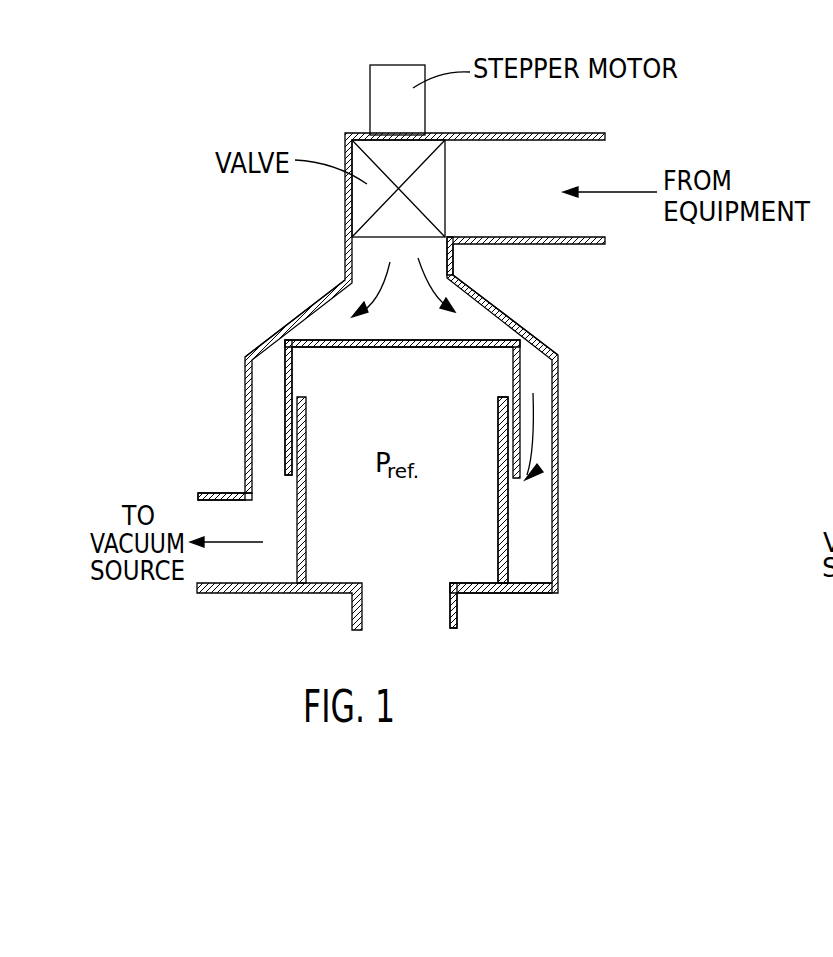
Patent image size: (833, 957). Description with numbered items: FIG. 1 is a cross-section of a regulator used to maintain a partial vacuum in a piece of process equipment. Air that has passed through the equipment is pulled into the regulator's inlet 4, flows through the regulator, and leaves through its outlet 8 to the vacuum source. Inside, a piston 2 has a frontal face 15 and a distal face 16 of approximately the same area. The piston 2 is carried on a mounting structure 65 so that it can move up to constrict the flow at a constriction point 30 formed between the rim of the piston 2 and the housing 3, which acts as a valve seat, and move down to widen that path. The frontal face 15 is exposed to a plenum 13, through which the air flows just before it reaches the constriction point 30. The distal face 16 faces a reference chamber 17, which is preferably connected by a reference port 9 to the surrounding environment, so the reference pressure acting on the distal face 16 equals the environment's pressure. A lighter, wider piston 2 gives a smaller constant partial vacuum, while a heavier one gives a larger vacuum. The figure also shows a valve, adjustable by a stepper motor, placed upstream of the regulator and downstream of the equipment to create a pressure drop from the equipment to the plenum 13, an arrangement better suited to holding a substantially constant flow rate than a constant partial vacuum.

The piston 2 is at (283, 377).
The housing 3 is at (497, 305).
The inlet 4 is at (455, 260).
The outlet 8 is at (217, 493).
The reference port 9 is at (455, 630).
The plenum 13 is at (417, 310).
The frontal face 15 is at (358, 338).
The distal face 16 is at (398, 348).
The reference chamber 17 is at (345, 571).
The constriction point 30 is at (288, 330).
The mounting structure 65 is at (505, 552).